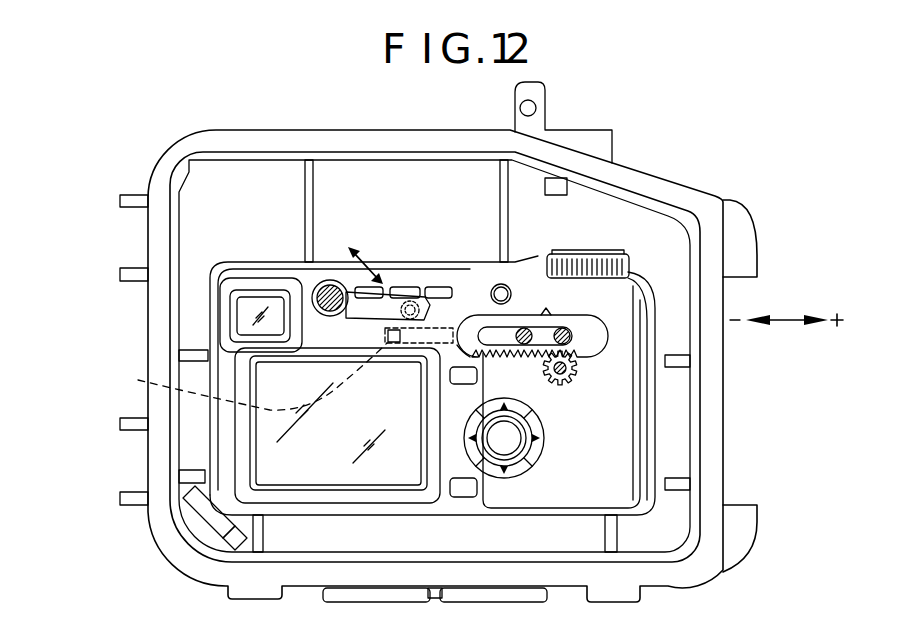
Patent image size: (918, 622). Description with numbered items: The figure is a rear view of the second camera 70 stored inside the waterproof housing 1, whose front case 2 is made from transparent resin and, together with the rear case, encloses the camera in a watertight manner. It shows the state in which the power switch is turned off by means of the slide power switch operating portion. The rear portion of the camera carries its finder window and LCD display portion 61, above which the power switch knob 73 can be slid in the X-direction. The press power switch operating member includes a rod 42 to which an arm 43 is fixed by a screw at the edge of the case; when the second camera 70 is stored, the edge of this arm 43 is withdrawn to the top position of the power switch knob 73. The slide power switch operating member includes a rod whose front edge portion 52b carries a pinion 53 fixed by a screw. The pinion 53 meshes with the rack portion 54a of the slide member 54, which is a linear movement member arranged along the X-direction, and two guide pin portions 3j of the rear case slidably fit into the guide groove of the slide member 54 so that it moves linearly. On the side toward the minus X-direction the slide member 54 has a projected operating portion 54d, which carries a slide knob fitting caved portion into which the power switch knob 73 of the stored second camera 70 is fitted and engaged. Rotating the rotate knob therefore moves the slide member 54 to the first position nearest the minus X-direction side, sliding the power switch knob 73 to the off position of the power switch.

The waterproof housing 1 is at (190, 112).
The front case 2 is at (152, 162).
The second camera 70 is at (208, 292).
The viewfinder window 61 is at (208, 332).
The rod 42 is at (340, 280).
The arm 43 is at (358, 247).
The operating portion 54d is at (454, 327).
The power switch knob 73 is at (207, 376).
The slide member 54 is at (604, 332).
The guide pin portions 3j is at (524, 328).
The rack portion 54a is at (533, 357).
The pinion 53 is at (578, 368).
The front edge portion 52b is at (565, 387).